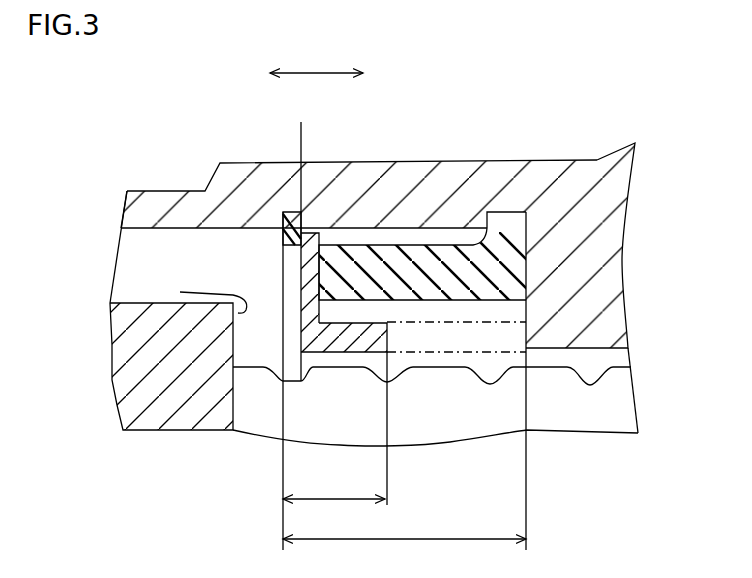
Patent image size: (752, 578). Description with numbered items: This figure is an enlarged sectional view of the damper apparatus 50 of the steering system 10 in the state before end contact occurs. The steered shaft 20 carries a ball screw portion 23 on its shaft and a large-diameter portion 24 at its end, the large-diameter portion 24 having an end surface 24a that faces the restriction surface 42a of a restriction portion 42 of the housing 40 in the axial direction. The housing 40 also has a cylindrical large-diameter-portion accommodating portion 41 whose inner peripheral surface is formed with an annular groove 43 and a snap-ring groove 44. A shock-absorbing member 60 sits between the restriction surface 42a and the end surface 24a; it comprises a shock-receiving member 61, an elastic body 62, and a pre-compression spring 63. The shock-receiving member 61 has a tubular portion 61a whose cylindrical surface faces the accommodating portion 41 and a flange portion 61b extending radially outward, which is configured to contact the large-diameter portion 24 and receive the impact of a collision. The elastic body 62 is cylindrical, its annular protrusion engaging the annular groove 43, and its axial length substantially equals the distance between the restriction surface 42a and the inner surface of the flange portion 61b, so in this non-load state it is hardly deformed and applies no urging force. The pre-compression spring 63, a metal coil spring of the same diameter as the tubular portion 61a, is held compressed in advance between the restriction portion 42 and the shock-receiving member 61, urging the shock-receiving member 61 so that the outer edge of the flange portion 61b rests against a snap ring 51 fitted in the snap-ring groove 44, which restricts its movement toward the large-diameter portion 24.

The steering system 10 is at (128, 112).
The steered shaft 20 is at (640, 378).
The ball screw portion 23 is at (572, 415).
The large-diameter portion 24 is at (152, 363).
The end surface 24a is at (180, 292).
The housing 40 is at (548, 157).
The large-diameter-portion accommodating portion 41 is at (238, 215).
The restriction portion 42 is at (595, 300).
The restriction surface 42a is at (518, 265).
The annular groove 43 is at (502, 212).
The snap-ring groove 44 is at (300, 212).
The damper apparatus 50 is at (122, 155).
The snap ring 51 is at (292, 212).
The shock-absorbing member 60 is at (262, 280).
The shock-receiving member 61 is at (253, 498).
The tubular portion 61a is at (347, 347).
The flange portion 61b is at (301, 275).
The elastic body 62 is at (393, 258).
The pre-compression spring 63 is at (465, 345).